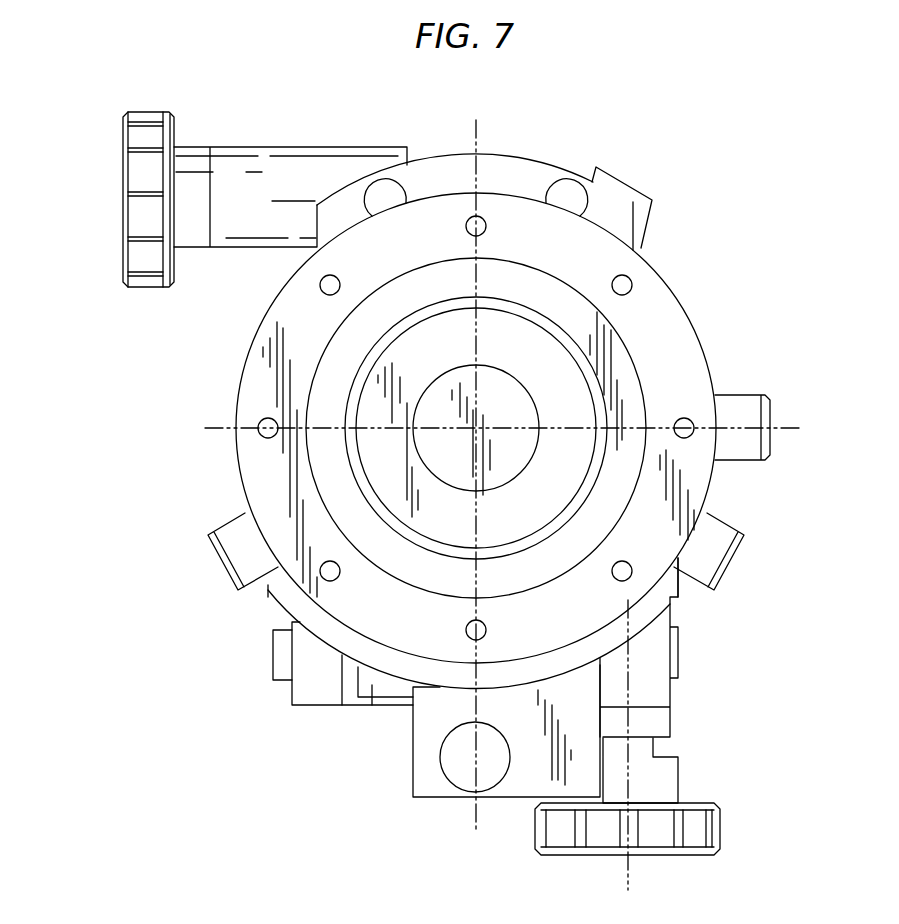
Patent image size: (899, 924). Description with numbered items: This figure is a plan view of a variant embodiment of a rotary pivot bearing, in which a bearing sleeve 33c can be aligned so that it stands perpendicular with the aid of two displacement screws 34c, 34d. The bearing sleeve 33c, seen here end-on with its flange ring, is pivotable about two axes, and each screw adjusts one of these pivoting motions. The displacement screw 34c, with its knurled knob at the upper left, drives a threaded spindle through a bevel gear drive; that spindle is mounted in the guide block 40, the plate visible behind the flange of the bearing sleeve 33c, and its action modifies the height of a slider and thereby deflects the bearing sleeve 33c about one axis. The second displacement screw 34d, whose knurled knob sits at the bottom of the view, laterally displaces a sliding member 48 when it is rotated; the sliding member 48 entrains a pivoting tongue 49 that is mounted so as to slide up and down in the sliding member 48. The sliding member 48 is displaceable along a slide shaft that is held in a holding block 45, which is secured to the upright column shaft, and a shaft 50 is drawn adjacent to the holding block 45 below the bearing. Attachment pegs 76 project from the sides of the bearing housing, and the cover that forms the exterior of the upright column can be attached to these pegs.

The displacement screw 34c is at (122, 144).
The guide block 40 is at (515, 167).
The bearing sleeve 33c is at (680, 325).
The attachment peg 76 is at (242, 573).
The sliding member 48 is at (370, 687).
The pivoting tongue 49 is at (410, 668).
The holding block 45 is at (652, 693).
The shaft 50 is at (646, 748).
The displacement screw 34d is at (560, 840).